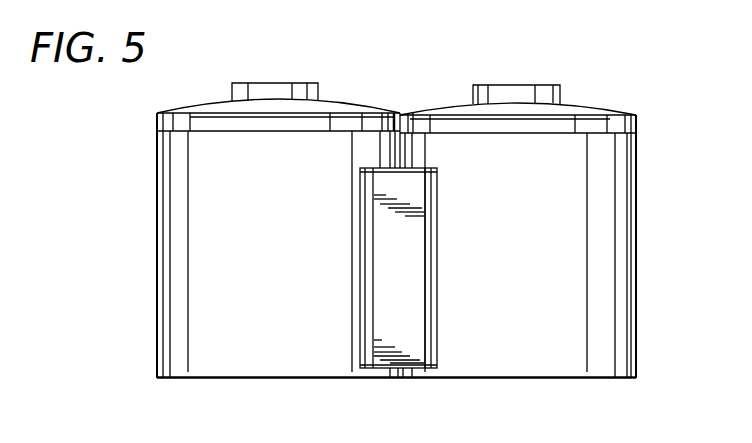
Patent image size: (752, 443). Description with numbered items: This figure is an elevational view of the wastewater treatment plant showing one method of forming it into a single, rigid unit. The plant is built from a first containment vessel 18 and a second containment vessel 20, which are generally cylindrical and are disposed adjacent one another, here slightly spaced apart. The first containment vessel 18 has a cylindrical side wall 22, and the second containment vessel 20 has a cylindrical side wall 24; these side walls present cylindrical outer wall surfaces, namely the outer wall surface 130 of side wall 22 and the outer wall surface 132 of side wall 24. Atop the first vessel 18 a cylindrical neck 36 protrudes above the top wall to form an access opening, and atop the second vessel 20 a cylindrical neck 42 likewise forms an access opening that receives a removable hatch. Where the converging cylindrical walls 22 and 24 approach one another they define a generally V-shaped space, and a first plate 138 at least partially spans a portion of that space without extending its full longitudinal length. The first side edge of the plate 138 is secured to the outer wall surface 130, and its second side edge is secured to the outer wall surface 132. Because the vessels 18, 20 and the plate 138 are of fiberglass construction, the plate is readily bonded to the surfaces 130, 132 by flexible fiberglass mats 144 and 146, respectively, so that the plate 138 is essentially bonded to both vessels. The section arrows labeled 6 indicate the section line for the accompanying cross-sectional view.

The first containment vessel 18 is at (149, 228).
The second containment vessel 20 is at (650, 271).
The cylindrical side wall 22 is at (158, 162).
The cylindrical side wall 24 is at (637, 191).
The cylindrical neck 36 is at (318, 86).
The cylindrical neck 42 is at (562, 88).
The outer wall surface 130 is at (252, 221).
The outer wall surface 132 is at (538, 221).
The first plate 138 is at (400, 372).
The flexible fiberglass mat 144 is at (365, 370).
The flexible fiberglass mat 146 is at (426, 370).
The section line for FIG. 6 is at (291, 253).